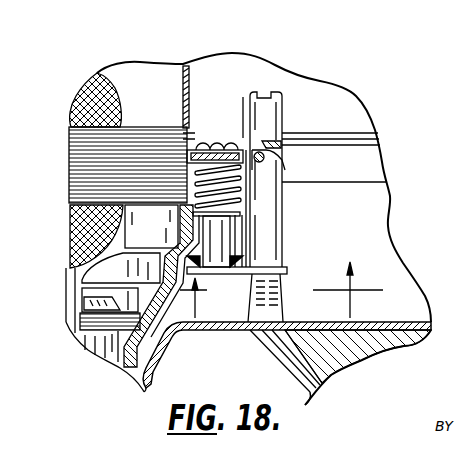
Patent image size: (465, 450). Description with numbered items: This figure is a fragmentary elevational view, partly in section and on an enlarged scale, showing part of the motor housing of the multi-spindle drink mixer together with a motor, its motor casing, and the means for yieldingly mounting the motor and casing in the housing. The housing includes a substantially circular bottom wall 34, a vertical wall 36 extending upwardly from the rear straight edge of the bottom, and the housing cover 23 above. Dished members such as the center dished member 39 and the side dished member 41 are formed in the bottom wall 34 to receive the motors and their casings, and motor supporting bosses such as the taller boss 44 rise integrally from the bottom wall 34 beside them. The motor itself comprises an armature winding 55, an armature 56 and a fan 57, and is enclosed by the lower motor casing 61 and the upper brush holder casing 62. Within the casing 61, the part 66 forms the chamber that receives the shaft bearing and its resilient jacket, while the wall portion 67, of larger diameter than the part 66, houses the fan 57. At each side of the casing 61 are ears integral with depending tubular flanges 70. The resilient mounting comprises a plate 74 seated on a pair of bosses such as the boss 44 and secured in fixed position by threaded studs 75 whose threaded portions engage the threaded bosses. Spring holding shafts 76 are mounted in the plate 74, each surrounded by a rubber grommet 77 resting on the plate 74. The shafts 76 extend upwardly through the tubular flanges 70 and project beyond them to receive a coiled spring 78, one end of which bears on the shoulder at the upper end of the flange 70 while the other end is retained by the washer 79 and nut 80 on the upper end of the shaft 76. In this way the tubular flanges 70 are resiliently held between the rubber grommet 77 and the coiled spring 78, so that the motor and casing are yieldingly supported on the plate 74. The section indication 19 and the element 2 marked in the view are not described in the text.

The base 2 is at (410, 337).
The section line 19 is at (271, 290).
The housing cover 23 is at (350, 110).
The bottom wall 34 is at (350, 364).
The vertical wall 36 is at (393, 277).
The dished member 39 is at (150, 387).
The dished member 41 is at (307, 400).
The taller boss 44 is at (258, 308).
The armature winding 55 is at (112, 92).
The armature 56 is at (125, 150).
The fan 57 is at (128, 262).
The lower motor casing 61 is at (115, 360).
The upper brush holder casing 62 is at (189, 66).
The part of the casing 66 is at (107, 322).
The wall portion 67 is at (166, 258).
The tubular flange 70 is at (242, 232).
The plate 74 is at (285, 268).
The threaded stud 75 is at (270, 203).
The spring holding shaft 76 is at (220, 235).
The rubber grommet 77 is at (237, 265).
The coiled spring 78 is at (280, 165).
The washer 79 is at (243, 97).
The nut 80 is at (225, 121).